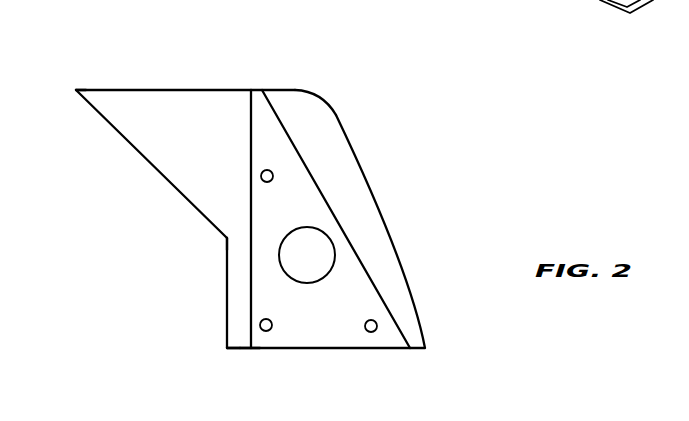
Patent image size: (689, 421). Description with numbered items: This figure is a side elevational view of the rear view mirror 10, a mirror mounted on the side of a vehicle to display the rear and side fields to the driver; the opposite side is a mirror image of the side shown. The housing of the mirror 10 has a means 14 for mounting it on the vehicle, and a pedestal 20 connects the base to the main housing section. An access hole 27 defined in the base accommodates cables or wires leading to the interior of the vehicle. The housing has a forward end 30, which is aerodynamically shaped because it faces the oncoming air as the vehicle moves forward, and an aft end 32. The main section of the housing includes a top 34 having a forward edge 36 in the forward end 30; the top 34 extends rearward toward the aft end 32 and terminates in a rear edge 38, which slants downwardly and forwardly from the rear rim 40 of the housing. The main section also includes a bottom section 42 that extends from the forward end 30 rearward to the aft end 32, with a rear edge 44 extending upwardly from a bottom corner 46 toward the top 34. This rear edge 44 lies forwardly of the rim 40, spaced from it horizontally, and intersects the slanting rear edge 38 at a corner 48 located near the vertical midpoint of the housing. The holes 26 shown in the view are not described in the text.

The rear view mirror 10 is at (628, 420).
The means for mounting 14 is at (272, 52).
The pedestal 20 is at (685, 0).
The mounting holes 26 is at (274, 176).
The access hole 27 is at (282, 272).
The forward end 30 is at (398, 148).
The aft end 32 is at (106, 257).
The top 34 is at (147, 89).
The forward edge 36 is at (333, 108).
The rear edge 38 is at (167, 183).
The rear rim 40 is at (76, 94).
The bottom section 42 is at (226, 343).
The rear edge 44 is at (225, 313).
The bottom corner 46 is at (240, 350).
The corner 48 is at (225, 243).